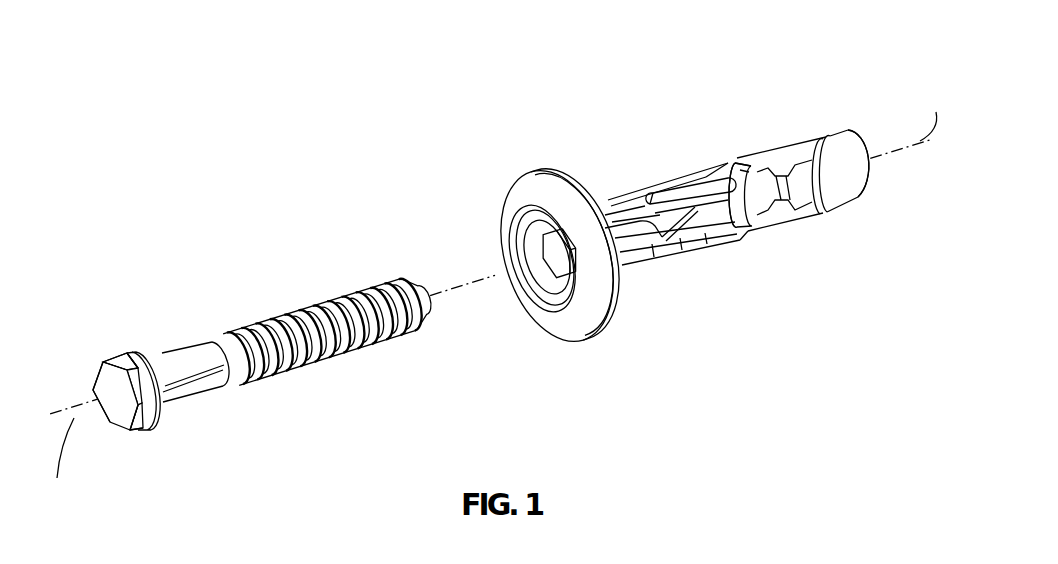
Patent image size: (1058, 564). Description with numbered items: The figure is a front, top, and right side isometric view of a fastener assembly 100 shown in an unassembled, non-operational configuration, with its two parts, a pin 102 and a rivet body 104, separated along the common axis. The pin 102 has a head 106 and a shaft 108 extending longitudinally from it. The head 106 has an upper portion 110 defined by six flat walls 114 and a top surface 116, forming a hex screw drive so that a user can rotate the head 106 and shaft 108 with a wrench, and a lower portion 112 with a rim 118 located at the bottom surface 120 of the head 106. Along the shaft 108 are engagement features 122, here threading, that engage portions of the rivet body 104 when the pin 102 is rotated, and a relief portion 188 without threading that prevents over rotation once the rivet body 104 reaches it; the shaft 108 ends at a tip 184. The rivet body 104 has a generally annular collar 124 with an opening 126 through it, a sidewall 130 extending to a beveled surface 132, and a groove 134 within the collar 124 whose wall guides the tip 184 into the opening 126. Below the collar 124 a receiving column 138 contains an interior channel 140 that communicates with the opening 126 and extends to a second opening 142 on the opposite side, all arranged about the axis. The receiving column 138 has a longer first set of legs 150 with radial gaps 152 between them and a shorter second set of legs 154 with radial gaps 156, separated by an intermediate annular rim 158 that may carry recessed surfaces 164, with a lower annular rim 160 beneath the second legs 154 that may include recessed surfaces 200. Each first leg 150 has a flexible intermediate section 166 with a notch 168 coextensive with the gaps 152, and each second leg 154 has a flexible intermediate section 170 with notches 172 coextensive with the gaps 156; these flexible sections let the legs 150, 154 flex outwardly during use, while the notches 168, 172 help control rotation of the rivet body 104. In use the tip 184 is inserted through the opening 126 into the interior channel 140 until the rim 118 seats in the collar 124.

The fastener assembly 100 is at (128, 40).
The pin 102 is at (233, 368).
The rivet body 104 is at (682, 230).
The head 106 is at (120, 420).
The shaft 108 is at (294, 389).
The upper portion 110 is at (115, 355).
The lower portion 112 is at (127, 358).
The flat walls 114 is at (137, 423).
The top surface 116 is at (100, 378).
The rim 118 is at (163, 403).
The bottom surface 120 is at (173, 352).
The engagement features 122 is at (392, 337).
The collar 124 is at (537, 253).
The opening 126 is at (533, 286).
The sidewall 130 is at (565, 168).
The beveled surface 132 is at (535, 187).
The groove 134 is at (515, 220).
The receiving column 138 is at (857, 176).
The interior channel 140 is at (530, 256).
The second opening 142 is at (876, 154).
The first set of legs 150 is at (686, 188).
The radial gaps 152 is at (699, 214).
The second set of legs 154 is at (747, 167).
The radial gaps 156 is at (753, 200).
The intermediate annular rim 158 is at (747, 210).
The lower annular rim 160 is at (818, 150).
The recessed surfaces 164 is at (710, 173).
The flexible intermediate section 166 is at (650, 190).
The notch 168 is at (670, 236).
The flexible intermediate section 170 is at (777, 150).
The notches 172 is at (783, 200).
The tip 184 is at (433, 290).
The relief portion 188 is at (230, 340).
The recessed surfaces 200 is at (828, 208).